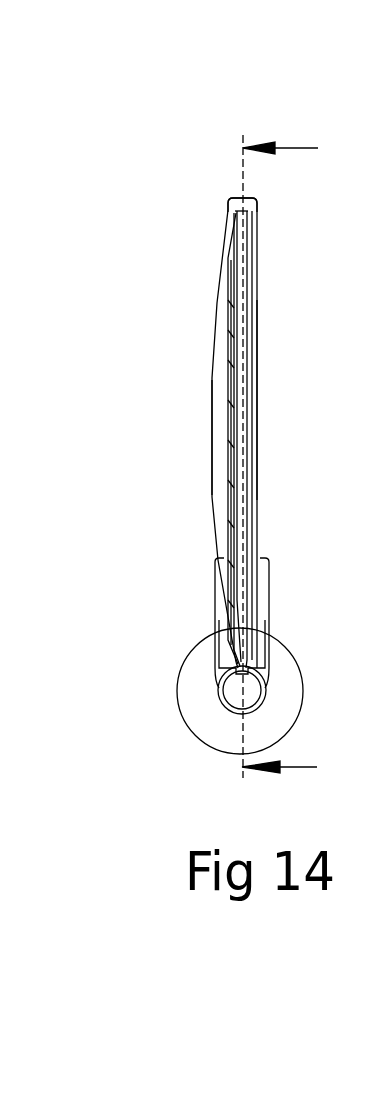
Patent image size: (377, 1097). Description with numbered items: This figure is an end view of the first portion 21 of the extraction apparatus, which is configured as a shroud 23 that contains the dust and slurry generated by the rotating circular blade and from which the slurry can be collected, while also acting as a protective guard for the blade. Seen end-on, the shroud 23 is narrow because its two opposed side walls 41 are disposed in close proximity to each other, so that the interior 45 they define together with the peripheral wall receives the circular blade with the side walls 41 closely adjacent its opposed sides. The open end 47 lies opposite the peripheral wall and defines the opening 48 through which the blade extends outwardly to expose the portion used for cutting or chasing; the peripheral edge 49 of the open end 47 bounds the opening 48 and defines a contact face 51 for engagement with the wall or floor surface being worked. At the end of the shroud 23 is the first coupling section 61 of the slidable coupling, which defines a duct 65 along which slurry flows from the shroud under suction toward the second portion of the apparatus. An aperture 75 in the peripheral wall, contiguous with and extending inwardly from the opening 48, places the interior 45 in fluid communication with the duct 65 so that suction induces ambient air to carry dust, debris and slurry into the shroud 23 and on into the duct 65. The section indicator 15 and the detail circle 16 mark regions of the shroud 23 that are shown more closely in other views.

The section line 15 is at (291, 471).
The detail circle 16 is at (257, 691).
The first portion 21 is at (171, 178).
The shroud 23 is at (217, 303).
The side walls 41 is at (212, 378).
The interior 45 is at (240, 270).
The open end 47 is at (247, 528).
The opening 48 is at (247, 245).
The peripheral edge 49 is at (252, 205).
The contact face 51 is at (253, 467).
The first coupling section 61 is at (260, 605).
The duct 65 is at (233, 690).
The aperture 75 is at (242, 663).